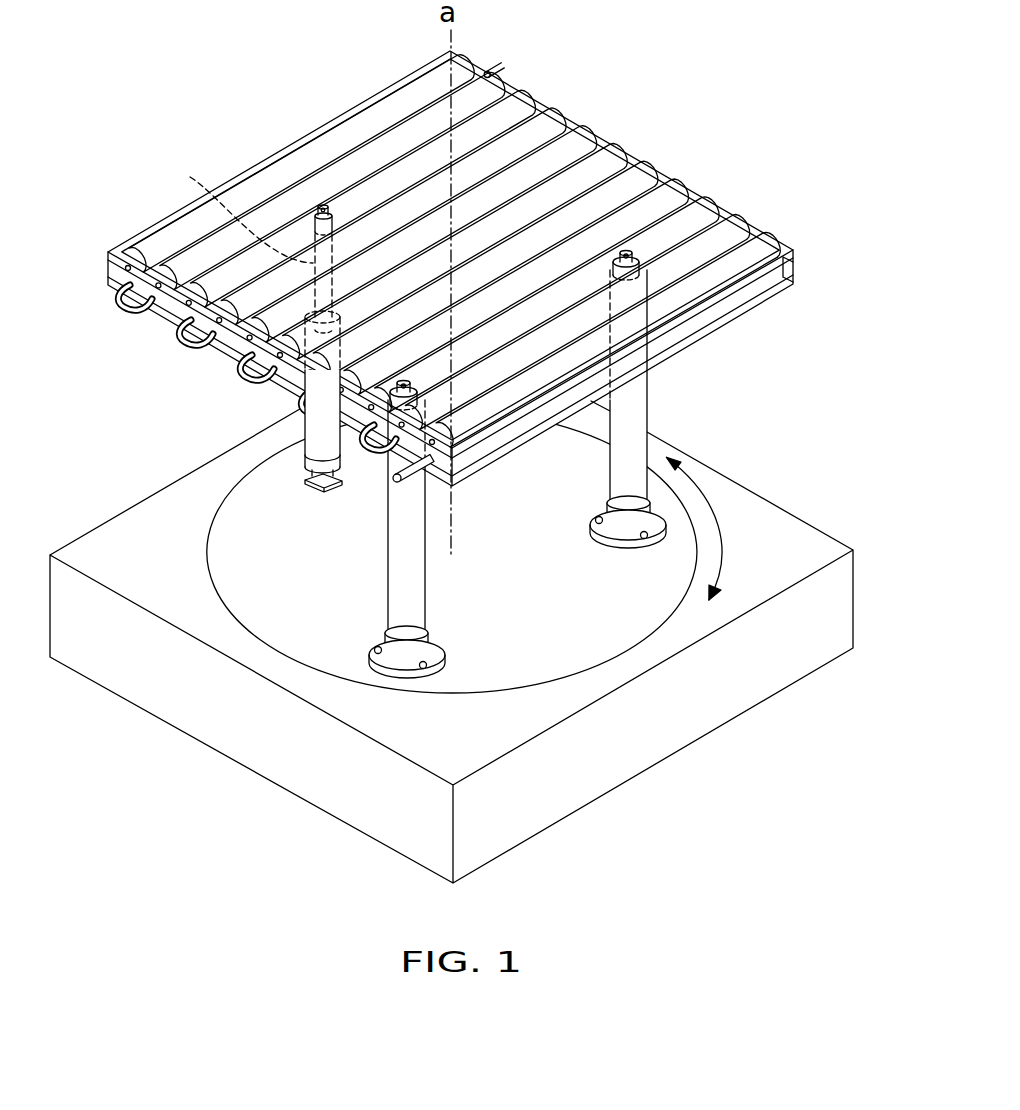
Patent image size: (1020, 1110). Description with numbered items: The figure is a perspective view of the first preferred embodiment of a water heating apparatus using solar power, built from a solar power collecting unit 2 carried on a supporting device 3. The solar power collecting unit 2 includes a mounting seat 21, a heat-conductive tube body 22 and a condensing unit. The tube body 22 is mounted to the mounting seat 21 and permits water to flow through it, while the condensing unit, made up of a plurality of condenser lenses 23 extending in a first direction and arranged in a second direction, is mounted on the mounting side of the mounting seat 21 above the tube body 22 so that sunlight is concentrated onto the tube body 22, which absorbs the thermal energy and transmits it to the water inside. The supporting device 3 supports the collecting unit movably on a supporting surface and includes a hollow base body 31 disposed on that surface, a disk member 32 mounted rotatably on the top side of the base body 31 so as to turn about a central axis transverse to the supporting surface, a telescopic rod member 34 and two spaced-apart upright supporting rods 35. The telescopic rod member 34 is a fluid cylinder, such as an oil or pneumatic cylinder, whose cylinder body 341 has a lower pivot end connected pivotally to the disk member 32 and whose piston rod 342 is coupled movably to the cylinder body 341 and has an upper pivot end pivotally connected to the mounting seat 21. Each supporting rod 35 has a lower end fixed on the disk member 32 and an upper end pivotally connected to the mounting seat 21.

The solar power collecting unit 2 is at (450, 304).
The mounting seat 21 is at (158, 336).
The heat-conductive tube body 22 is at (412, 492).
The condenser lenses 23 is at (492, 90).
The supporting device 3 is at (451, 567).
The hollow base body 31 is at (672, 752).
The disk member 32 is at (668, 598).
The telescopic rod member 34 is at (266, 340).
The cylinder body 341 is at (338, 445).
The piston rod 342 is at (192, 178).
The upright supporting rods 35 is at (425, 578).